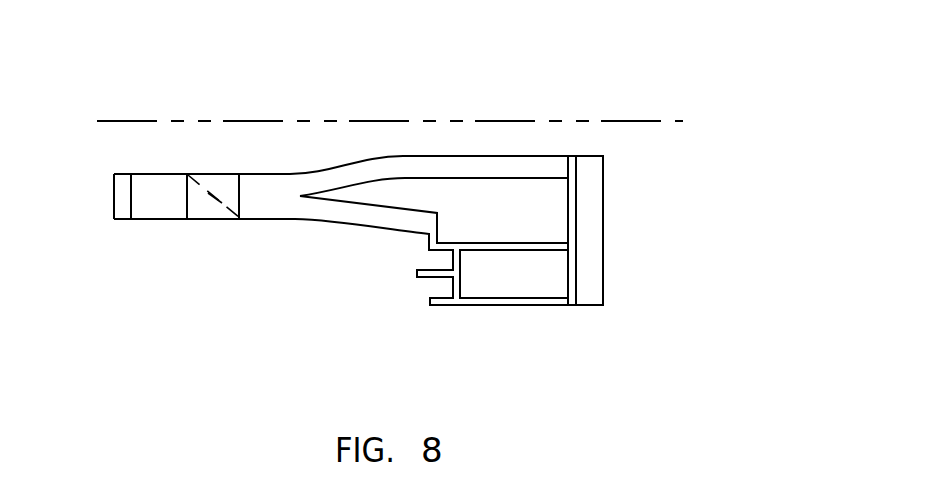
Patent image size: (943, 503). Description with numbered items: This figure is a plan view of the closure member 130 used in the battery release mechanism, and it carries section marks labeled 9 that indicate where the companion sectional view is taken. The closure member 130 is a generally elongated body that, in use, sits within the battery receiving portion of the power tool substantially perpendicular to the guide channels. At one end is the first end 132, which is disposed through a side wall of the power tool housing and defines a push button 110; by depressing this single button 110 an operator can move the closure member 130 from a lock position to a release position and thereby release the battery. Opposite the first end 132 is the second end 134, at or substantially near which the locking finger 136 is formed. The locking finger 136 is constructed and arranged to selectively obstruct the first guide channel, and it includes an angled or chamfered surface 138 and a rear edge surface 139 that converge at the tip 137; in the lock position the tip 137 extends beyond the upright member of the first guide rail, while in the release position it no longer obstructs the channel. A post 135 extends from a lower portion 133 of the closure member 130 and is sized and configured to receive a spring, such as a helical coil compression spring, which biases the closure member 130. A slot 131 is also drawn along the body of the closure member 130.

The section line 9- 9 is at (114, 100).
The push button 110 is at (603, 273).
The closure member 130 is at (728, 110).
The slot 131 is at (345, 185).
The first end 132 is at (603, 186).
The lower portion 133 is at (492, 287).
The second end 134 is at (113, 195).
The post 135 is at (425, 276).
The locking finger 136 is at (195, 197).
The tip 137 is at (243, 217).
The chamfered surface 138 is at (222, 203).
The rear edge surface 139 is at (200, 220).